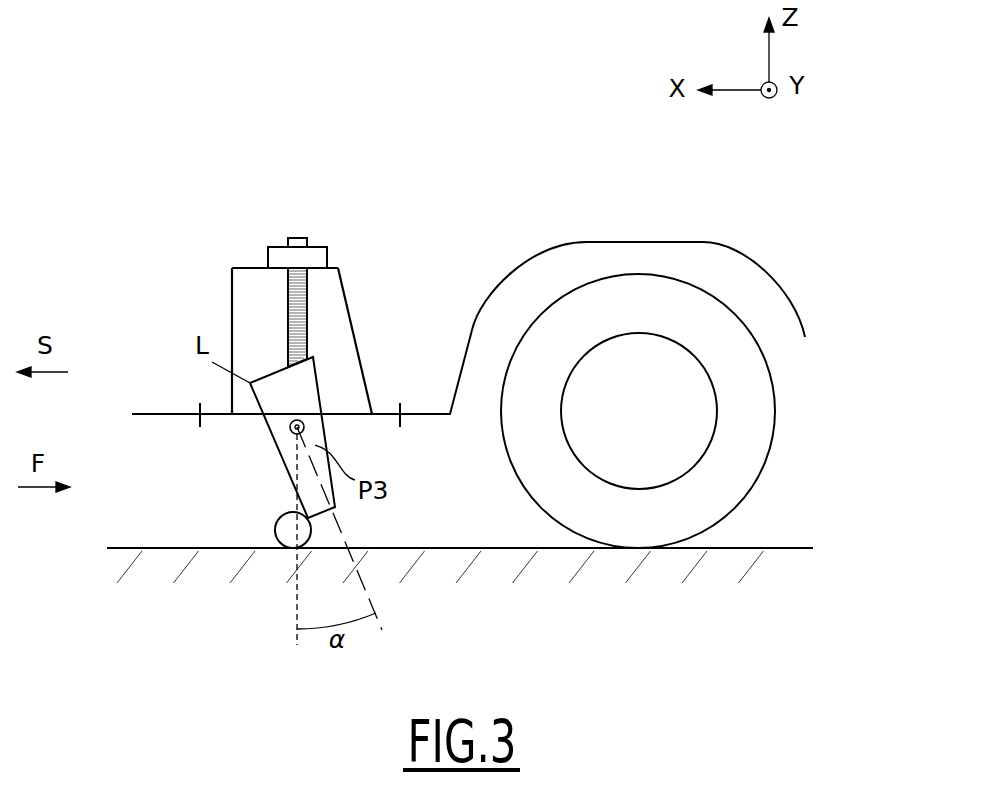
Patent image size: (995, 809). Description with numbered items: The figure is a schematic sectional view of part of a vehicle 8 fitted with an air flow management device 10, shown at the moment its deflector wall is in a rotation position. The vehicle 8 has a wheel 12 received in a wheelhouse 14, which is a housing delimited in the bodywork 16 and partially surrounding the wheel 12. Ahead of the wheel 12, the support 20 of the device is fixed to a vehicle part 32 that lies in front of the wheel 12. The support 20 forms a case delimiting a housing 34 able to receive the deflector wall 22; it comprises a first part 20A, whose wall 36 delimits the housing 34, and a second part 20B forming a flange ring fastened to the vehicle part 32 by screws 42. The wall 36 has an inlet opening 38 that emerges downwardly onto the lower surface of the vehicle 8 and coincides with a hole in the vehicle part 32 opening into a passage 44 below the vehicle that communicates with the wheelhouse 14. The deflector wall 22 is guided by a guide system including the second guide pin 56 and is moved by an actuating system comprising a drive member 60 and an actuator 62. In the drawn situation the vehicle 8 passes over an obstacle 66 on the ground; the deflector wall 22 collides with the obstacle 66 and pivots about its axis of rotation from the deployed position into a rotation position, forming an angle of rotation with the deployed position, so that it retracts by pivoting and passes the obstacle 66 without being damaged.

The vehicle 8 is at (808, 223).
The air flow management device 10 is at (445, 232).
The wheel 12 is at (784, 463).
The wheelhouse 14 is at (614, 240).
The bodywork 16 is at (687, 205).
The support 20 is at (215, 269).
The first part of the support 20A is at (230, 315).
The second part of the support 20B is at (215, 416).
The deflector wall 22 is at (307, 488).
The vehicle part 32 is at (145, 414).
The housing 34 is at (330, 353).
The wall 36 is at (368, 388).
The inlet opening 38 is at (348, 418).
The screws 42 is at (200, 407).
The passage 44 is at (410, 512).
The second guide pin 56 is at (290, 430).
The drive member 60 is at (298, 297).
The actuator 62 is at (312, 238).
The obstacle 66 is at (284, 535).